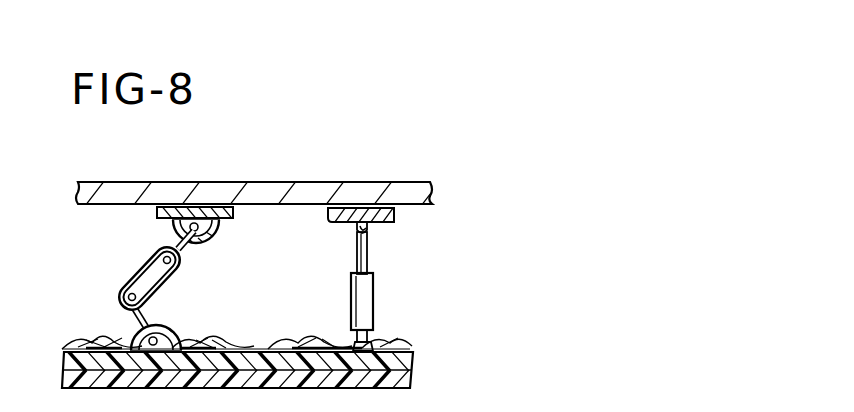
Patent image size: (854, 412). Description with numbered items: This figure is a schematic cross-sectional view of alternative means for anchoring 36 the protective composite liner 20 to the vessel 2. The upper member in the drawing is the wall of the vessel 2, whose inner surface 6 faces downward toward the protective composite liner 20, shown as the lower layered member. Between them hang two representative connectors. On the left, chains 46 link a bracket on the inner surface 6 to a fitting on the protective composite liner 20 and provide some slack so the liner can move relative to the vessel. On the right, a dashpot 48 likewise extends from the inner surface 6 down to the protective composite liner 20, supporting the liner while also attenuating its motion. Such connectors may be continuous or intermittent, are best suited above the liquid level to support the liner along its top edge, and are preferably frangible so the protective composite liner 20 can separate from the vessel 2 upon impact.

The vessel 2 is at (296, 176).
The inner surface 6 is at (116, 207).
The protective composite liner 20 is at (434, 371).
The means for anchoring 36 is at (330, 288).
The chains 46 is at (127, 280).
The dashpot 48 is at (374, 290).